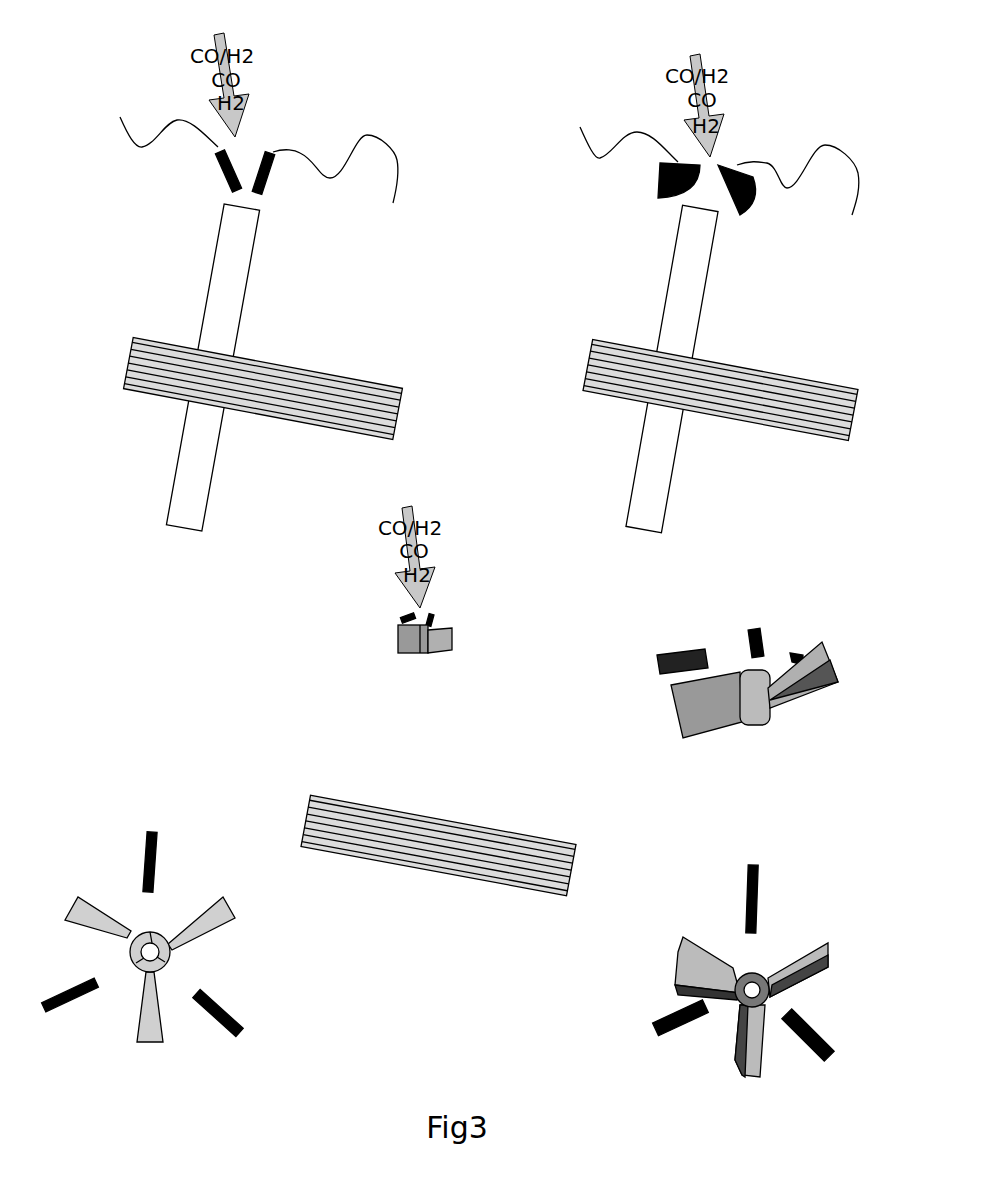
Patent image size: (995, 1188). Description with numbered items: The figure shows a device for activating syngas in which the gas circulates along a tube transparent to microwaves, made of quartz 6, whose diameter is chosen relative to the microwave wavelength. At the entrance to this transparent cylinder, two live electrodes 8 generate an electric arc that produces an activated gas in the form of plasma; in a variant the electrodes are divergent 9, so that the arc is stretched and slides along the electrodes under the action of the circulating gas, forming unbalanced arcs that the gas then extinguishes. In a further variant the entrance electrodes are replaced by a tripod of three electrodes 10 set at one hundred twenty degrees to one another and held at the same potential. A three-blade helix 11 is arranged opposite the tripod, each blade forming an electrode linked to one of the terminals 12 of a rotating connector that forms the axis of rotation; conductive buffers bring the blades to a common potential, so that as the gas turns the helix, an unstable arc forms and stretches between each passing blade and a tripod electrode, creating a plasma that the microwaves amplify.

The quartz tube 6 is at (208, 258).
The live electrodes 8 is at (273, 138).
The divergent electrodes 9 is at (735, 160).
The tripod of three electrodes 10 is at (145, 845).
The three-blade helix 11 is at (203, 935).
The terminals of the rotating connector 12 is at (135, 972).